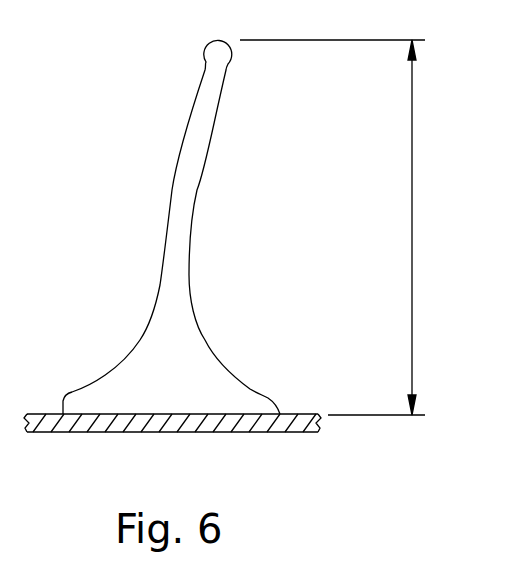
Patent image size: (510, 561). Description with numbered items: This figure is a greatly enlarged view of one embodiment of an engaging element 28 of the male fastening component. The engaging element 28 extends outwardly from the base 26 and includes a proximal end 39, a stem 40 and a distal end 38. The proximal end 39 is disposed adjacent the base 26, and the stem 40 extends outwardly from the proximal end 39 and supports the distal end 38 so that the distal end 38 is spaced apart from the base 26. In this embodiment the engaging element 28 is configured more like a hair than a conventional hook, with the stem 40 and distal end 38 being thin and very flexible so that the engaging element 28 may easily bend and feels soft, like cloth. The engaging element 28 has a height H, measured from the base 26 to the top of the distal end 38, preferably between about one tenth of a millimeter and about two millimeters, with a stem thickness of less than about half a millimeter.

The base 26 is at (167, 427).
The engaging element 28 is at (138, 182).
The distal end 38 is at (215, 83).
The proximal end 39 is at (255, 395).
The stem 40 is at (165, 293).
The height H is at (412, 228).